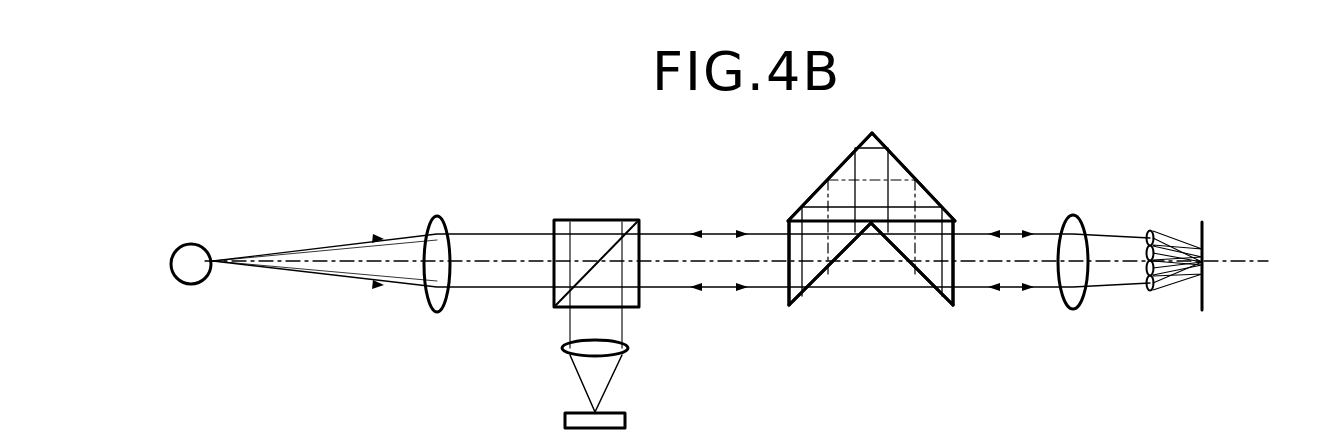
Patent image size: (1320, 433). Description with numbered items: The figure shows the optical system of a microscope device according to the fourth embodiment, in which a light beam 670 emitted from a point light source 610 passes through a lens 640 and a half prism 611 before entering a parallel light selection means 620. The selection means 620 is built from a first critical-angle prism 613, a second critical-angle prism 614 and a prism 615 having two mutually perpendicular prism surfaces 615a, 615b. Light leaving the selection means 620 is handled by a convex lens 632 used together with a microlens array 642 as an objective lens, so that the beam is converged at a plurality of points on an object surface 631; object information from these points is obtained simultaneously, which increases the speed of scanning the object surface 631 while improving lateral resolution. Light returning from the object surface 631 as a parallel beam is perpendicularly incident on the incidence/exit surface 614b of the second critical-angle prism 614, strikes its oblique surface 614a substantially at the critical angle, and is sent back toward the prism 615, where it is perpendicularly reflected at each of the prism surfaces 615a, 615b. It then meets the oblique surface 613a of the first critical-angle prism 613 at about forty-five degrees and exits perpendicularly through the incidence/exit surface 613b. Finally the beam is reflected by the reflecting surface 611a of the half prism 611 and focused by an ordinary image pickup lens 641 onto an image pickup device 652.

The point light source 610 is at (187, 244).
The collimating lens 640 is at (425, 221).
The light beam 670 is at (307, 268).
The half prism 611 is at (629, 256).
The reflecting surface 611a is at (632, 225).
The image pickup lens 641 is at (628, 348).
The image pickup device 652 is at (626, 420).
The parallel light selection means 620 is at (881, 236).
The prism 615 is at (888, 189).
The prism surface 615a is at (928, 190).
The prism surface 615b is at (843, 162).
The first critical-angle prism 613 is at (810, 288).
The oblique surface 613a is at (820, 273).
The incidence/exit surface 613b is at (788, 292).
The second critical-angle prism 614 is at (939, 294).
The oblique surface 614a is at (897, 250).
The incidence/exit surface 614b is at (953, 292).
The convex lens 632 is at (1073, 216).
The microlens array 642 is at (1153, 222).
The object surface 631 is at (1202, 224).